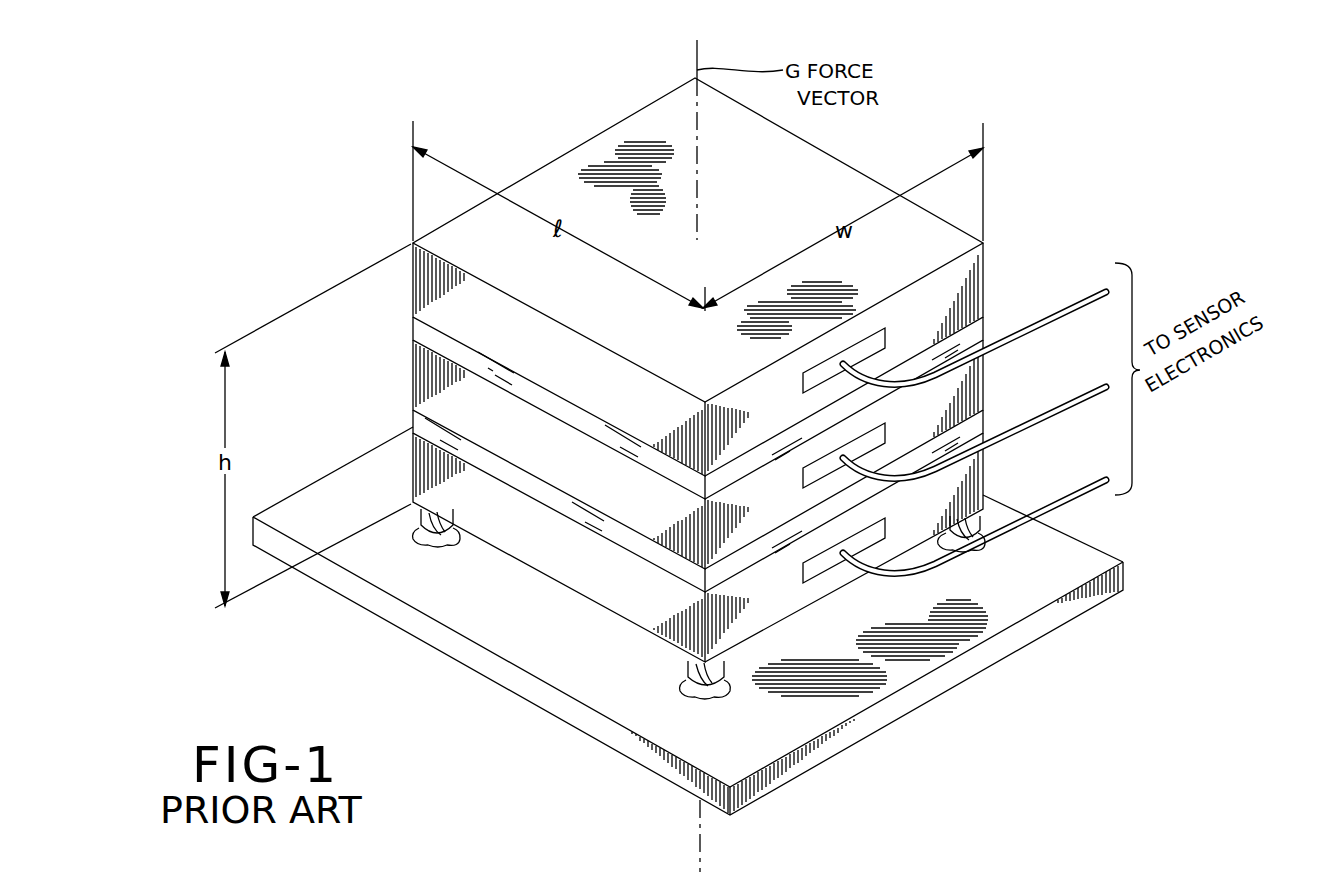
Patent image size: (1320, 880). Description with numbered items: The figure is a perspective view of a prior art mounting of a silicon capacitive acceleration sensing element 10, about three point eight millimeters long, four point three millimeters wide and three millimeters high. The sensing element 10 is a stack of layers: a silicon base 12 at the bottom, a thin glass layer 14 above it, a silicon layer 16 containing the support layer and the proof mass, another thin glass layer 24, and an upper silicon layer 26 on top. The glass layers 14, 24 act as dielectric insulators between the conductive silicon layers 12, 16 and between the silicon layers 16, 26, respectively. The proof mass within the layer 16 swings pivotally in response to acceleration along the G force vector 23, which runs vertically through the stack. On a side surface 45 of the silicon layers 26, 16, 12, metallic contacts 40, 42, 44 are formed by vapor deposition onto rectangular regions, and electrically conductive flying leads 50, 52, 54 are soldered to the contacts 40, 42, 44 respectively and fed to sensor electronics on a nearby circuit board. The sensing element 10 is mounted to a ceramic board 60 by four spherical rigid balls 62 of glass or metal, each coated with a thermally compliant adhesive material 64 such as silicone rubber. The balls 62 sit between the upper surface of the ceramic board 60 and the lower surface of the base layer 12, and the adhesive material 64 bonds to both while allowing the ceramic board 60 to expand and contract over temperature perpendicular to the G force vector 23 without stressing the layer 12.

The sensing element 10 is at (406, 500).
The base 12 is at (632, 594).
The layer (glass) 14 is at (561, 506).
The layer (silicon) 16 is at (632, 503).
The G force vector 23 is at (698, 212).
The layer (glass) 24 is at (562, 408).
The layer (silicon) 26 is at (726, 277).
The metallic contact 40 is at (821, 376).
The metallic contact 42 is at (821, 467).
The metallic contact 44 is at (821, 566).
The side surface 45 is at (947, 288).
The flying lead 50 is at (1086, 300).
The flying lead 52 is at (1086, 395).
The flying lead 54 is at (1086, 490).
The ceramic board 60 is at (432, 633).
The spherical rigid balls 62 is at (698, 675).
The thermally compliant adhesive material 64 is at (716, 690).